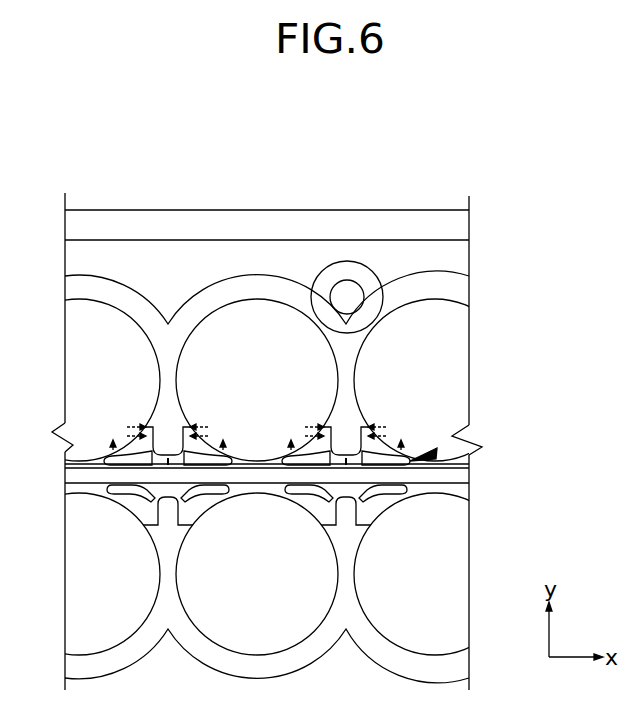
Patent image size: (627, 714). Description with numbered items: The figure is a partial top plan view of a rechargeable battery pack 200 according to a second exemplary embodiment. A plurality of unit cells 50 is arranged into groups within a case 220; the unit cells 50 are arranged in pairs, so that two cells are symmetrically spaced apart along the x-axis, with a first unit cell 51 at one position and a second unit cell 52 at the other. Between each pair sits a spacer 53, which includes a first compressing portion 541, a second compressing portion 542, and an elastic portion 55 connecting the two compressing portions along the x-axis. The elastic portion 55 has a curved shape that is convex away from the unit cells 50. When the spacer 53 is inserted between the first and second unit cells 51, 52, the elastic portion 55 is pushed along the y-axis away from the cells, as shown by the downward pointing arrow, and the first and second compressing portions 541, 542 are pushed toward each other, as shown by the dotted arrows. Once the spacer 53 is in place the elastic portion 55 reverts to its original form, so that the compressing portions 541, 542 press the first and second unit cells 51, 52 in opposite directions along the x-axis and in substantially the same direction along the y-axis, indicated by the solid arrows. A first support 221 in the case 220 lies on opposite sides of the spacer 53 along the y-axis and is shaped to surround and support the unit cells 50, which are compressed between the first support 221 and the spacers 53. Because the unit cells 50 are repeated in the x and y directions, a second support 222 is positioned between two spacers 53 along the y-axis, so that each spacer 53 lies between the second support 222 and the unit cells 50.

The rechargeable battery pack 200 is at (157, 121).
The unit cells 50 is at (325, 146).
The first unit cell 51 is at (268, 327).
The second unit cell 52 is at (352, 320).
The case 220 is at (421, 228).
The first support 221 is at (460, 287).
The second support 222 is at (453, 477).
The spacer 53 is at (434, 455).
The first compressing portion 541 is at (124, 458).
The second compressing portion 542 is at (218, 450).
The elastic portion 55 is at (160, 496).